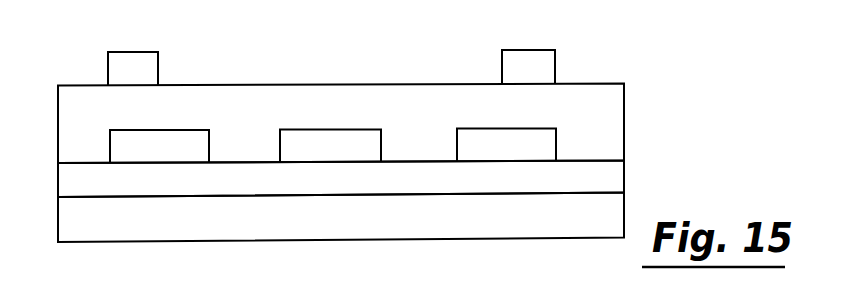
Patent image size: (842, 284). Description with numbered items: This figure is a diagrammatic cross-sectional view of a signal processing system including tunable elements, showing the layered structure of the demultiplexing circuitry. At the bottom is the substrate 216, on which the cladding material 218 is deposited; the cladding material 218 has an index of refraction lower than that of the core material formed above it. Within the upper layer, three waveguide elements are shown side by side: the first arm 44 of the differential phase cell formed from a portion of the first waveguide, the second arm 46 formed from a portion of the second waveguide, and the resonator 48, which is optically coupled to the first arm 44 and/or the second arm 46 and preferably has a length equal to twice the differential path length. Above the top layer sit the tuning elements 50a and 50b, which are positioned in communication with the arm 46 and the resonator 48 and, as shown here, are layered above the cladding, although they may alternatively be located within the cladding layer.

The substrate 216 is at (625, 210).
The cladding material 218 is at (625, 180).
The first arm 44 is at (340, 128).
The second arm 46 is at (515, 127).
The resonator 48 is at (153, 128).
The tuning element 50a is at (108, 69).
The tuning element 50b is at (537, 67).